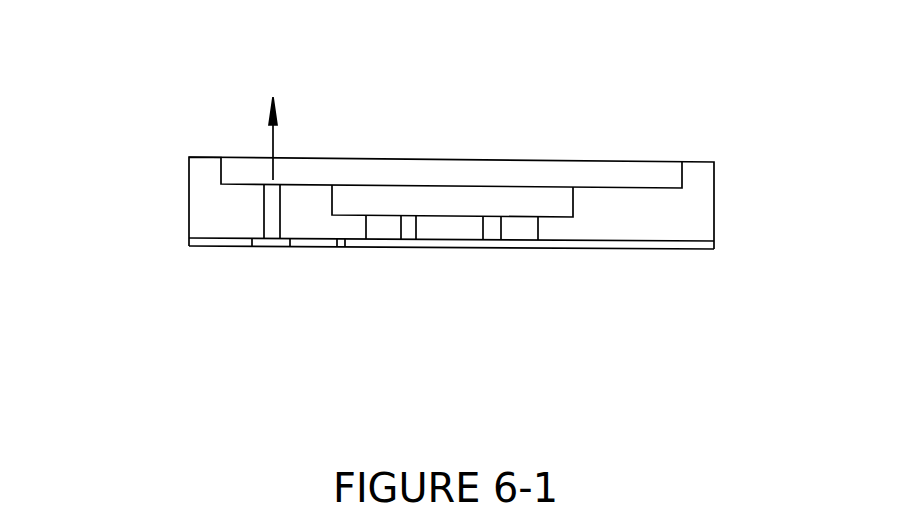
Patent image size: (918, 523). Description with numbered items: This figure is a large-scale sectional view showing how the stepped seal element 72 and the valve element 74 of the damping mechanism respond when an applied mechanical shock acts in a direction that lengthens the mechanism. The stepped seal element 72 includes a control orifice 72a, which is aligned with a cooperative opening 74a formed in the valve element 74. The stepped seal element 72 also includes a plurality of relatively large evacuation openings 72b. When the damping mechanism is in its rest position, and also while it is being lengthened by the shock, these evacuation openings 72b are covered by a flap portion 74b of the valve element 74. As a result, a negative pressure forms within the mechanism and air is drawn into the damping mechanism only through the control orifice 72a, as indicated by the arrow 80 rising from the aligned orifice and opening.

The stepped seal element 72 is at (677, 209).
The control orifice 72a is at (272, 217).
The evacuation openings 72b is at (520, 230).
The valve element 74 is at (675, 246).
The cooperative opening 74a is at (273, 248).
The flap portion 74b is at (405, 302).
The arrow 80 is at (273, 97).